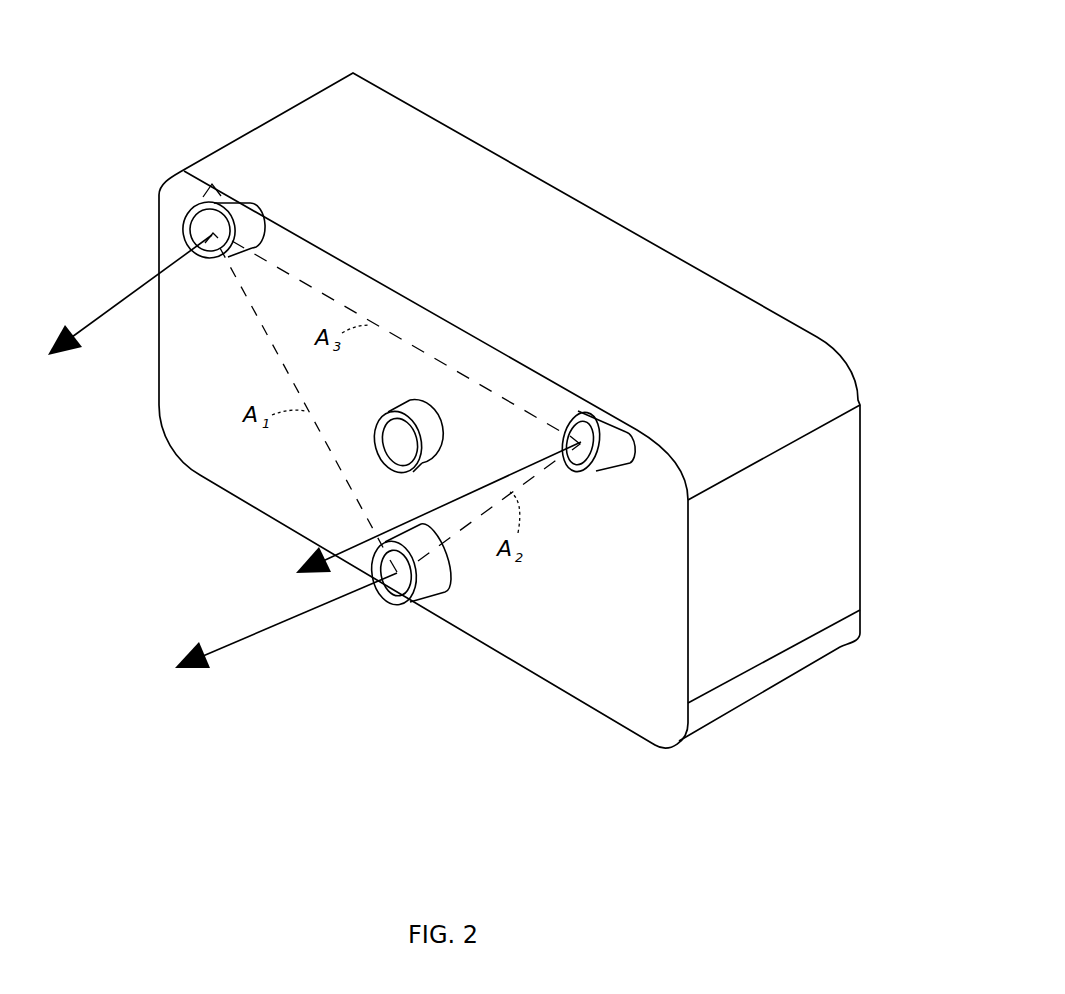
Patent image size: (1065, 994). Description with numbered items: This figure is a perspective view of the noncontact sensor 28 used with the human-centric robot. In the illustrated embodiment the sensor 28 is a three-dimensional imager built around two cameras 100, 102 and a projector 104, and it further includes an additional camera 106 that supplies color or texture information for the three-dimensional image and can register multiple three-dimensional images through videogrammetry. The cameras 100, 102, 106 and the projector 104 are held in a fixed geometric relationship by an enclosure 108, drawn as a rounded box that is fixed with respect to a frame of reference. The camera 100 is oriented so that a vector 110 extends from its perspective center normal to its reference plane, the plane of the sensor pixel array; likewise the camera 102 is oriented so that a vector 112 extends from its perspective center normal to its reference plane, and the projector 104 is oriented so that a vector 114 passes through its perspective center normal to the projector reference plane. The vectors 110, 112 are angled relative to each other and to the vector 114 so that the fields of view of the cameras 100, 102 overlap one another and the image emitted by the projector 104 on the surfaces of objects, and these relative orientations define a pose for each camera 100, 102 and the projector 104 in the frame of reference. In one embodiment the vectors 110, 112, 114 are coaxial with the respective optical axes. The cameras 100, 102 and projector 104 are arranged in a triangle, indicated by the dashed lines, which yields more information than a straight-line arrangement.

The sensor 28 is at (676, 132).
The camera 100 is at (298, 199).
The camera 102 is at (663, 413).
The projector 104 is at (356, 629).
The camera 106 is at (350, 428).
The enclosure 108 is at (693, 267).
The vector 110 is at (135, 288).
The vector 112 is at (362, 542).
The vector 114 is at (245, 640).